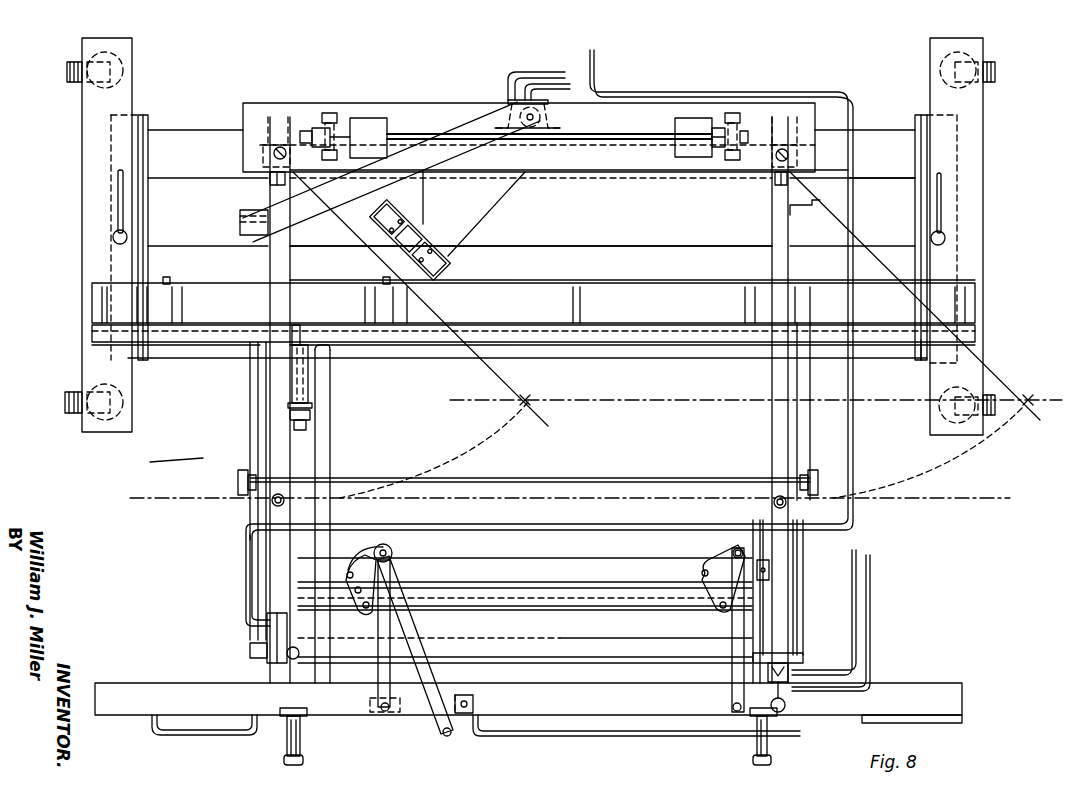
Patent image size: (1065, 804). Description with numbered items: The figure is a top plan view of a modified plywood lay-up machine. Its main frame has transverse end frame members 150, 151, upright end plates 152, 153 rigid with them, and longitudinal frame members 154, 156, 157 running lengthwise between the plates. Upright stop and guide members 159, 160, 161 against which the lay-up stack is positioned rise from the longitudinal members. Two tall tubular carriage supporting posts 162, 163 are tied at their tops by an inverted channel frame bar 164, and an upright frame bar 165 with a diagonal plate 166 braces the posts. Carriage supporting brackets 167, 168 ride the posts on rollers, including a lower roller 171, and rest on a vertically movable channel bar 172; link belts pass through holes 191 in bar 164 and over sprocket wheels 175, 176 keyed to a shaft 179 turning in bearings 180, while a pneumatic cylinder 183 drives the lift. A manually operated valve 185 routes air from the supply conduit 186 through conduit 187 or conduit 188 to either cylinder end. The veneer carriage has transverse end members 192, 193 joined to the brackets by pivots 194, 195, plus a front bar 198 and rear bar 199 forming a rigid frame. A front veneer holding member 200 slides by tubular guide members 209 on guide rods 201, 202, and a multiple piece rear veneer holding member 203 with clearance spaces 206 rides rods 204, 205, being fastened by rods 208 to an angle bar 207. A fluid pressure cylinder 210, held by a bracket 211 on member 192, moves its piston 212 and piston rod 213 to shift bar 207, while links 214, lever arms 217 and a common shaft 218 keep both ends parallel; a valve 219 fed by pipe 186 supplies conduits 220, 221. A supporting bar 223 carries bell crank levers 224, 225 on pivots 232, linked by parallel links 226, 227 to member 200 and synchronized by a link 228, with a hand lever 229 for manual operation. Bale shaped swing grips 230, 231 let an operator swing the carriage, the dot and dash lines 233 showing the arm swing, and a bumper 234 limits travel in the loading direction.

The transverse end frame member 150 is at (82, 222).
The transverse end frame member 151 is at (983, 213).
The upright end plate 152 is at (148, 118).
The upright end plate 153 is at (920, 115).
The longitudinal frame member 154 is at (898, 358).
The longitudinal frame member 156 is at (595, 247).
The longitudinal frame member 157 is at (898, 178).
The upright stop and guide member 159 is at (170, 272).
The upright stop and guide member 160 is at (385, 278).
The upright stop and guide member 161 is at (762, 265).
The carriage supporting post 162 is at (280, 148).
The carriage supporting post 163 is at (785, 150).
The frame bar 164 is at (440, 110).
The upright frame bar 165 is at (240, 222).
The diagonal plate 166 is at (312, 212).
The carriage supporting bracket 167 is at (276, 445).
The carriage supporting bracket 168 is at (772, 422).
The lower roller 171 is at (272, 180).
The channel bar 172 is at (755, 145).
The sprocket wheel 175 is at (330, 113).
The sprocket wheel 176 is at (733, 113).
The shaft 179 is at (630, 134).
The bearing 180 is at (380, 118).
The fluid pressure cylinder 183 is at (548, 117).
The manually operated valve 185 is at (785, 695).
The air pressure supply conduit 186 is at (593, 60).
The conduit 187 is at (520, 72).
The conduit 188 is at (555, 84).
The hole 191 is at (345, 112).
The transverse end member 192 is at (272, 540).
The transverse end member 193 is at (765, 555).
The pivot 194 is at (272, 503).
The pivot 195 is at (528, 398).
The front bar 198 is at (618, 650).
The rear bar 199 is at (690, 360).
The front veneer holding member 200 is at (612, 698).
The guide rod 201 is at (330, 460).
The guide rod 202 is at (763, 457).
The rear veneer holding member 203 is at (640, 283).
The rod 204 is at (250, 398).
The rod 205 is at (797, 595).
The clearance space 206 is at (195, 325).
The angle bar 207 is at (245, 325).
The rod 208 is at (160, 322).
The tubular guide member 209 is at (305, 750).
The fluid pressure cylinder 210 is at (312, 378).
The bracket 211 is at (310, 420).
The piston 212 is at (308, 400).
The piston rod 213 is at (300, 335).
The link 214 is at (252, 425).
The lever arm 217 is at (240, 488).
The shaft 218 is at (588, 478).
The manually operated valve 219 is at (268, 660).
The conduit 220 is at (340, 523).
The conduit 221 is at (390, 525).
The supporting bar 223 is at (612, 556).
The bell crank lever 224 is at (372, 570).
The bell crank lever 225 is at (718, 560).
The link 226 is at (385, 600).
The link 227 is at (732, 628).
The link 228 is at (585, 606).
The hand lever 229 is at (443, 735).
The carriage swing grip 230 is at (182, 736).
The carriage swing grip 231 is at (568, 735).
The pivot 232 is at (378, 548).
The dot and dash lines 233 is at (495, 402).
The bumper 234 is at (383, 225).